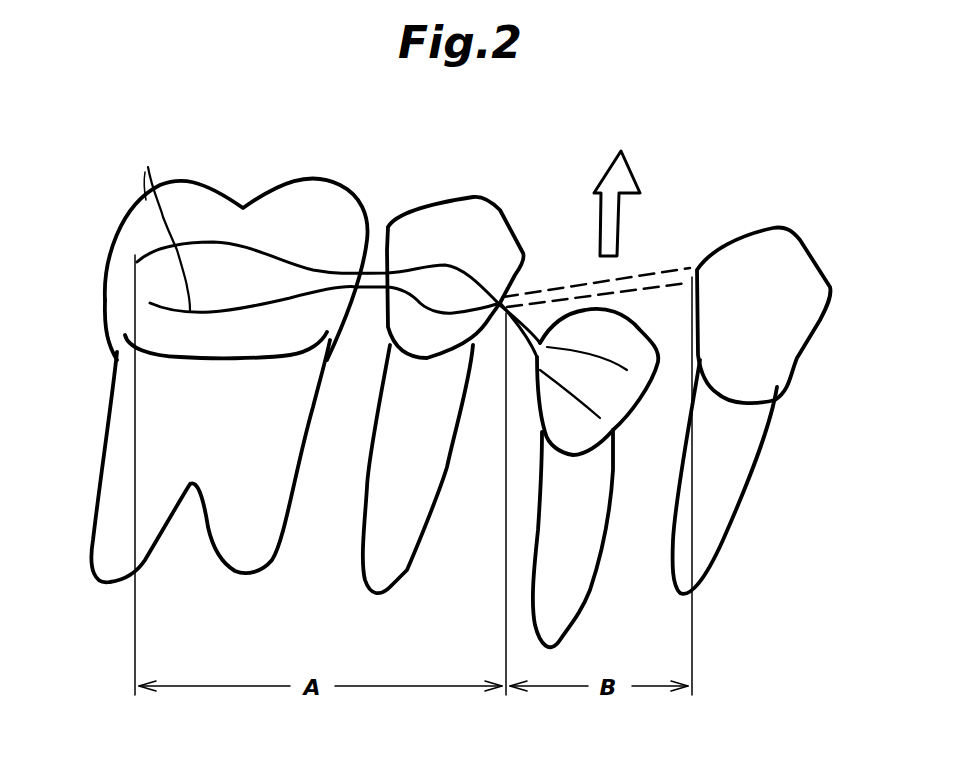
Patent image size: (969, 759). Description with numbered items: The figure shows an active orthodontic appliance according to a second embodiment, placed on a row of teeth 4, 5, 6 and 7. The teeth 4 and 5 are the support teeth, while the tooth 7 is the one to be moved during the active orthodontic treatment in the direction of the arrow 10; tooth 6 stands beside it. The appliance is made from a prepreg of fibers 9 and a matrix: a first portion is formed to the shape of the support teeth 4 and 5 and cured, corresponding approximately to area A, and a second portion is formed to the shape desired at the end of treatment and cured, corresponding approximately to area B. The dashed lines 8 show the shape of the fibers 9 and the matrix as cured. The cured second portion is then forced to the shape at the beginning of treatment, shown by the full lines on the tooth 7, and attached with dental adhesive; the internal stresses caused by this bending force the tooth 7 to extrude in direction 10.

The support tooth 4 is at (308, 207).
The support tooth 5 is at (452, 218).
The tooth 6 is at (778, 253).
The tooth to be moved 7 is at (613, 320).
The dashed lines 8 is at (550, 287).
The fibers 9 is at (162, 220).
The arrow 10 is at (627, 172).